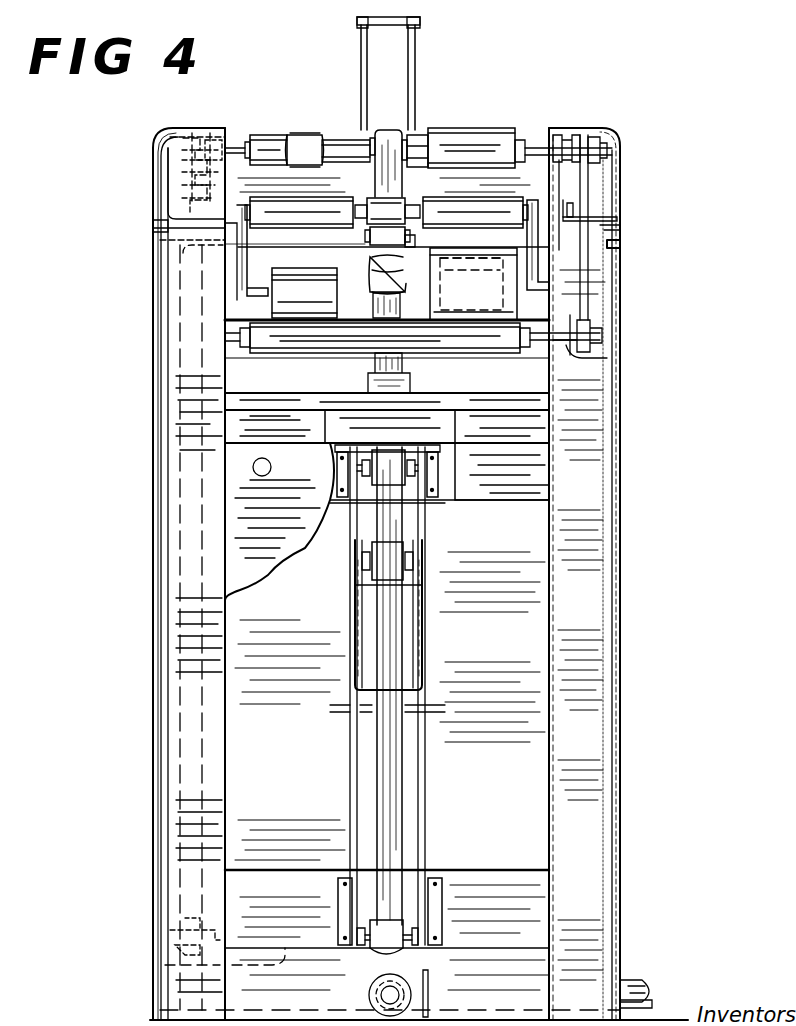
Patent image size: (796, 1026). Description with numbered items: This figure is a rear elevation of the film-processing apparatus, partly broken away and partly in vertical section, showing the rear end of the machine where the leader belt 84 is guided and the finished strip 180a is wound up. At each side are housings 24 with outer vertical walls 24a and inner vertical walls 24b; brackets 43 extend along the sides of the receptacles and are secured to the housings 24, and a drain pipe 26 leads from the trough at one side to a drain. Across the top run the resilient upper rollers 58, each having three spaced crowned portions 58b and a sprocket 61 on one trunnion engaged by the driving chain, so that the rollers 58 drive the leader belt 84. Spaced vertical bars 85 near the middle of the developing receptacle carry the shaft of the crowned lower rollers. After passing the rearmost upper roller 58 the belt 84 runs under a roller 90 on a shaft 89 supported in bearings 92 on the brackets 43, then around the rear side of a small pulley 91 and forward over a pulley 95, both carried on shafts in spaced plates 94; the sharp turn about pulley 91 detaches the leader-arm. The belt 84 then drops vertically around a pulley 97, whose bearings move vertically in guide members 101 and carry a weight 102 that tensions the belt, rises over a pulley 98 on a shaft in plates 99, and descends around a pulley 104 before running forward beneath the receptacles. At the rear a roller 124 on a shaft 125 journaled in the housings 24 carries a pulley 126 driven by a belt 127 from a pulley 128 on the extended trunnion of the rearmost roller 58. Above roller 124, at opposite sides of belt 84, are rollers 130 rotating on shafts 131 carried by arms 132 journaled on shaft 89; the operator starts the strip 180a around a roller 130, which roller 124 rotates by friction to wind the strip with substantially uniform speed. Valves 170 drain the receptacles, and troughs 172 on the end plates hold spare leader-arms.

The housing 24 is at (160, 710).
The outer vertical wall 24a is at (156, 518).
The inner vertical wall 24b is at (222, 470).
The drain pipe 26 is at (632, 984).
The bracket 43 is at (158, 228).
The upper roller 58 is at (272, 135).
The crowned portion 58b is at (308, 142).
The sprocket 61 is at (198, 138).
The leader belt 84 is at (397, 742).
The bar 85 is at (415, 68).
The shaft 89 is at (362, 206).
The roller 90 is at (296, 194).
The pulley 91 is at (416, 243).
The bearing 92 is at (570, 208).
The plate 94 is at (367, 252).
The pulley 95 is at (370, 297).
The pulley 97 is at (412, 556).
The pulley 98 is at (408, 482).
The plate 99 is at (440, 470).
The guide member 101 is at (350, 806).
The weight 102 is at (408, 640).
The pulley 104 is at (405, 928).
The roller 124 is at (512, 353).
The shaft 125 is at (607, 358).
The pulley 126 is at (590, 322).
The belt 127 is at (600, 218).
The pulley 128 is at (590, 130).
The roller 130 is at (338, 268).
The shaft 131 is at (256, 290).
The arm 132 is at (247, 246).
The valve 170 is at (285, 968).
The trough 172 is at (342, 410).
The strip 180a is at (478, 145).